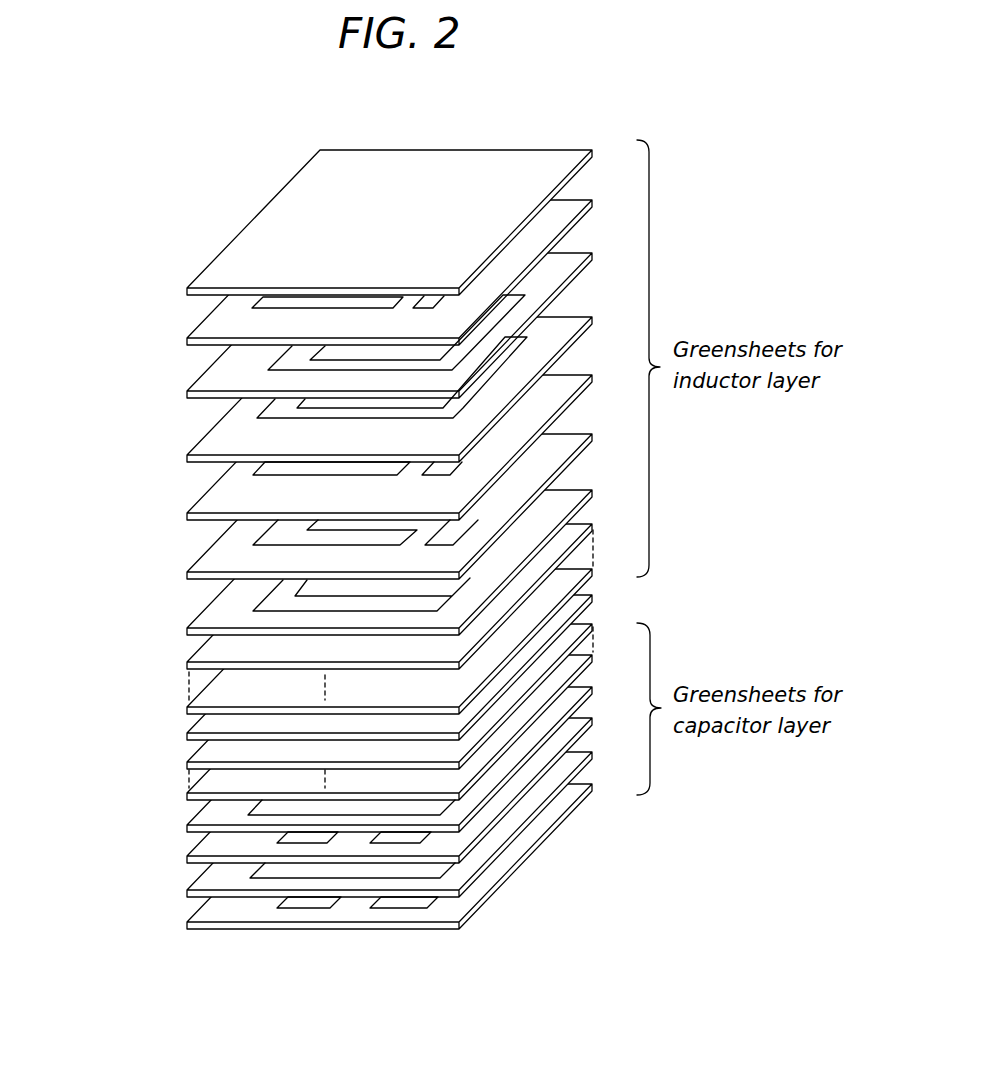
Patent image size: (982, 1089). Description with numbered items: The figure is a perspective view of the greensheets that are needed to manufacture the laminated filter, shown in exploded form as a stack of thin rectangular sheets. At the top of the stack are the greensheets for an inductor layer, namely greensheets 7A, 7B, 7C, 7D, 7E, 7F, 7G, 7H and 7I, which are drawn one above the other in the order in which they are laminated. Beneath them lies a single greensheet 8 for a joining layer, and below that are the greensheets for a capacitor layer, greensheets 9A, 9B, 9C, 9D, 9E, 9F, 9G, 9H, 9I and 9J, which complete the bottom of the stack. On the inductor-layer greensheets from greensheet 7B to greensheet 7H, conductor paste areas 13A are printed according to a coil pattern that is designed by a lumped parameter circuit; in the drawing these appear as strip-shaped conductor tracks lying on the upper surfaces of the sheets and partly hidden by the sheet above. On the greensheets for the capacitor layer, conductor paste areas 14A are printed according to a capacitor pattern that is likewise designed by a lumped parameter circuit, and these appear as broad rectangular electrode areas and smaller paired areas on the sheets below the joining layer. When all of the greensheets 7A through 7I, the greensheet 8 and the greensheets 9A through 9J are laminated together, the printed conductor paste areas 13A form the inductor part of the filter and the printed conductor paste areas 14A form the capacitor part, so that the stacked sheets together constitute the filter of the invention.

The greensheet for inductor layer 7A is at (593, 151).
The greensheet for inductor layer 7B is at (593, 201).
The greensheet for inductor layer 7C is at (593, 254).
The greensheet for inductor layer 7D is at (593, 318).
The greensheet for inductor layer 7E is at (593, 376).
The greensheet for inductor layer 7F is at (593, 435).
The greensheet for inductor layer 7G is at (593, 491).
The greensheet for inductor layer 7H is at (593, 525).
The greensheet for inductor layer 7I is at (593, 570).
The greensheet for joining layer 8 is at (593, 596).
The greensheet for capacitor layer 9A is at (192, 760).
The greensheet for capacitor layer 9B is at (320, 781).
The greensheet for capacitor layer 9C is at (336, 770).
The greensheet for capacitor layer 9D is at (352, 790).
The greensheet for capacitor layer 9E is at (368, 824).
The greensheet for capacitor layer 9F is at (192, 907).
The greensheet for capacitor layer 9G is at (336, 770).
The greensheet for capacitor layer 9H is at (352, 790).
The greensheet for capacitor layer 9I is at (368, 824).
The greensheet for capacitor layer 9J is at (192, 928).
The conductor paste area 13A is at (273, 600).
The conductor paste area 14A is at (440, 872).